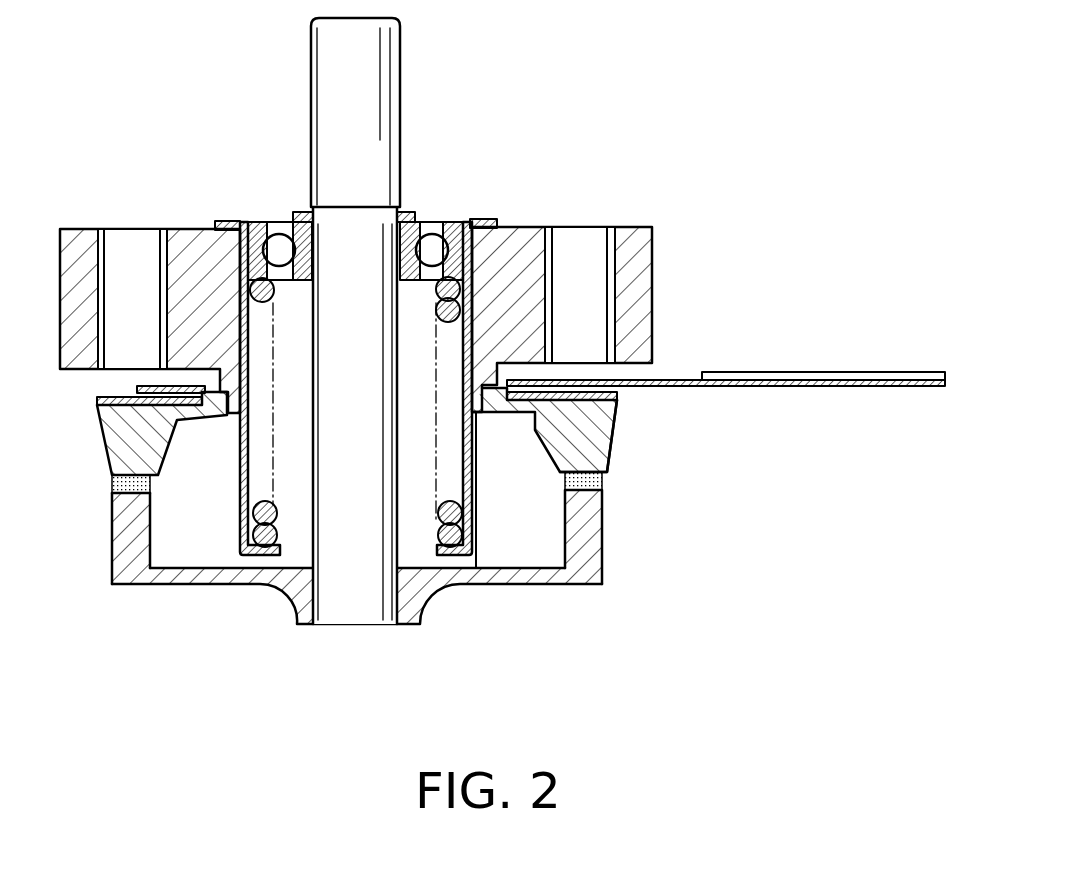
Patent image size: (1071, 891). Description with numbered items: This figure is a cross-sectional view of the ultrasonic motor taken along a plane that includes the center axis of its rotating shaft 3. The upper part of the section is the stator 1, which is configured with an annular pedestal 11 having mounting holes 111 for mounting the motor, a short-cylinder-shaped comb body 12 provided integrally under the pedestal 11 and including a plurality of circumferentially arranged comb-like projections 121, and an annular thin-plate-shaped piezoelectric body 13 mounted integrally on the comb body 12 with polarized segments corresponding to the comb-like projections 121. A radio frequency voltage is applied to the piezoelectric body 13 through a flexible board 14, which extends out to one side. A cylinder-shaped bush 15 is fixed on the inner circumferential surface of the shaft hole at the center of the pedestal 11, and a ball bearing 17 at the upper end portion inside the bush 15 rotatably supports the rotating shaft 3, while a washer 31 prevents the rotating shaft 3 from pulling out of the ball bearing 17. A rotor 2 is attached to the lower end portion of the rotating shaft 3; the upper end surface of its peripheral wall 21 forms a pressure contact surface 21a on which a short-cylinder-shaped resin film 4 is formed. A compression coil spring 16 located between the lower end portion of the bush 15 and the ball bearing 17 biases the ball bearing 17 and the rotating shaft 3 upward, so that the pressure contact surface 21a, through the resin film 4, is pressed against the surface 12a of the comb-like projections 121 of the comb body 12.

The stator 1 is at (384, 291).
The rotor 2 is at (388, 551).
The rotating shaft 3 is at (396, 40).
The resin film 4 is at (565, 478).
The annular pedestal 11 is at (387, 291).
The comb body 12 is at (390, 437).
The surface of the comb-like projections 12a is at (112, 477).
The piezoelectric body 13 is at (618, 397).
The flexible board 14 is at (683, 380).
The bush 15 is at (490, 219).
The compression coil spring 16 is at (443, 527).
The ball bearing 17 is at (462, 222).
The peripheral wall 21 is at (220, 582).
The pressure contact surface 21a is at (148, 490).
The washer 31 is at (310, 217).
The mounting holes 111 is at (157, 248).
The comb-like projections 121 is at (597, 463).